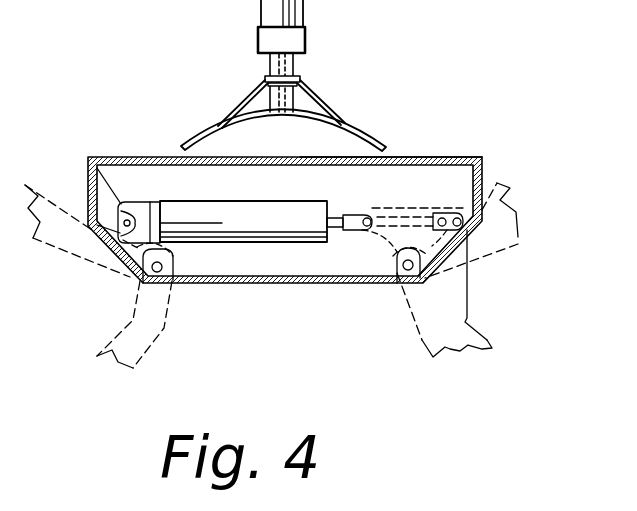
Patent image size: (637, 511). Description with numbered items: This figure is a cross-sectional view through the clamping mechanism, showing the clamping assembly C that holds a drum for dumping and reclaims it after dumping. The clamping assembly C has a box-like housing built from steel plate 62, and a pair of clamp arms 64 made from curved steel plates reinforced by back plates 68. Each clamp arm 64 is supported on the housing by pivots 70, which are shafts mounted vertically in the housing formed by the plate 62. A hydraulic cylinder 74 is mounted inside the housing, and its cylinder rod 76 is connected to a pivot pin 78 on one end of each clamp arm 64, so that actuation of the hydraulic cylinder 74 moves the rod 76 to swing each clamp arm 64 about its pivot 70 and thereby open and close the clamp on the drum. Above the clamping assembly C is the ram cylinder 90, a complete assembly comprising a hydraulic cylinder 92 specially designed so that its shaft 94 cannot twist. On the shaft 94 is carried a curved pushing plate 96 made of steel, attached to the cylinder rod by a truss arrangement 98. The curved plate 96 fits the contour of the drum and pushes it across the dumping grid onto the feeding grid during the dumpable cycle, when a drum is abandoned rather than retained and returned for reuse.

The ram cylinder 90 is at (306, 14).
The hydraulic cylinder 92 is at (263, 4).
The shaft 94 is at (295, 65).
The curved pushing plate 96 is at (367, 127).
The truss arrangement 98 is at (227, 107).
The steel plate 62 is at (441, 134).
The clamping assembly C is at (460, 150).
The hydraulic cylinder 74 is at (232, 201).
The cylinder rod 76 is at (362, 196).
The pivot pin 78 is at (378, 218).
The pivots 70 is at (163, 266).
The back plates 68 is at (72, 256).
The clamp arms 64 is at (112, 279).